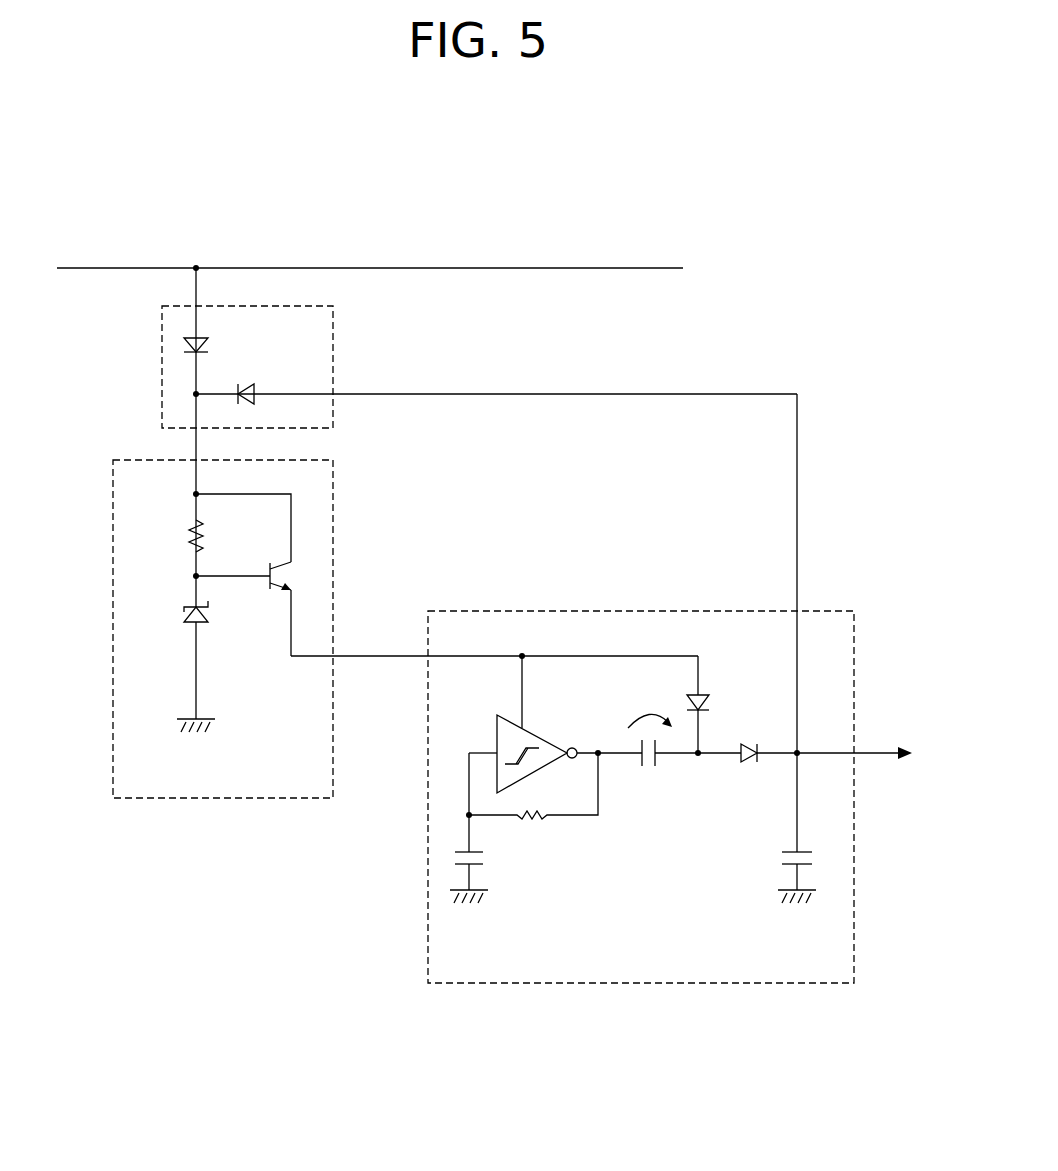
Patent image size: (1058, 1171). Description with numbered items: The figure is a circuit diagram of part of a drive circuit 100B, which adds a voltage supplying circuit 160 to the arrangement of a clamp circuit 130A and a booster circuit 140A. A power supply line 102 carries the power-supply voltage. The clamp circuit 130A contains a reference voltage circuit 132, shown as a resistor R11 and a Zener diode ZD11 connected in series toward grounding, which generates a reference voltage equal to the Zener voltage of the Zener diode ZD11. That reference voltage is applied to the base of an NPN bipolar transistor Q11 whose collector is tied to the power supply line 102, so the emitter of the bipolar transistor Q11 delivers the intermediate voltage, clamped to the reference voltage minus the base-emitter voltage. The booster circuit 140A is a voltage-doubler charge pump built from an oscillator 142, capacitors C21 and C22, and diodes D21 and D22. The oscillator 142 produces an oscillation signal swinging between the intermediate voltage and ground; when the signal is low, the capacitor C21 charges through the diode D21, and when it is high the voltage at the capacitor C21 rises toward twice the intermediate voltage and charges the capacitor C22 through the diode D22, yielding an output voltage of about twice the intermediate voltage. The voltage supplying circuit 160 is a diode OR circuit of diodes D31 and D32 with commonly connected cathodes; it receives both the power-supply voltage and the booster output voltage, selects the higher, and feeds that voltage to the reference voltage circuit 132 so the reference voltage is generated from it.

The drive circuit 100B is at (848, 167).
The power supply line 102 is at (518, 255).
The voltage supplying circuit 160 is at (162, 364).
The diode D31 is at (207, 348).
The diode D32 is at (252, 383).
The clamp circuit 130A is at (113, 612).
The resistor R11 is at (174, 537).
The Zener diode ZD11 is at (189, 628).
The bipolar transistor Q11 is at (282, 595).
The reference voltage circuit 132 is at (183, 693).
The booster circuit 140A is at (850, 596).
The oscillator 142 is at (608, 913).
The capacitor C21 is at (648, 770).
The capacitor C22 is at (780, 861).
The diode D21 is at (705, 696).
The diode D22 is at (749, 770).